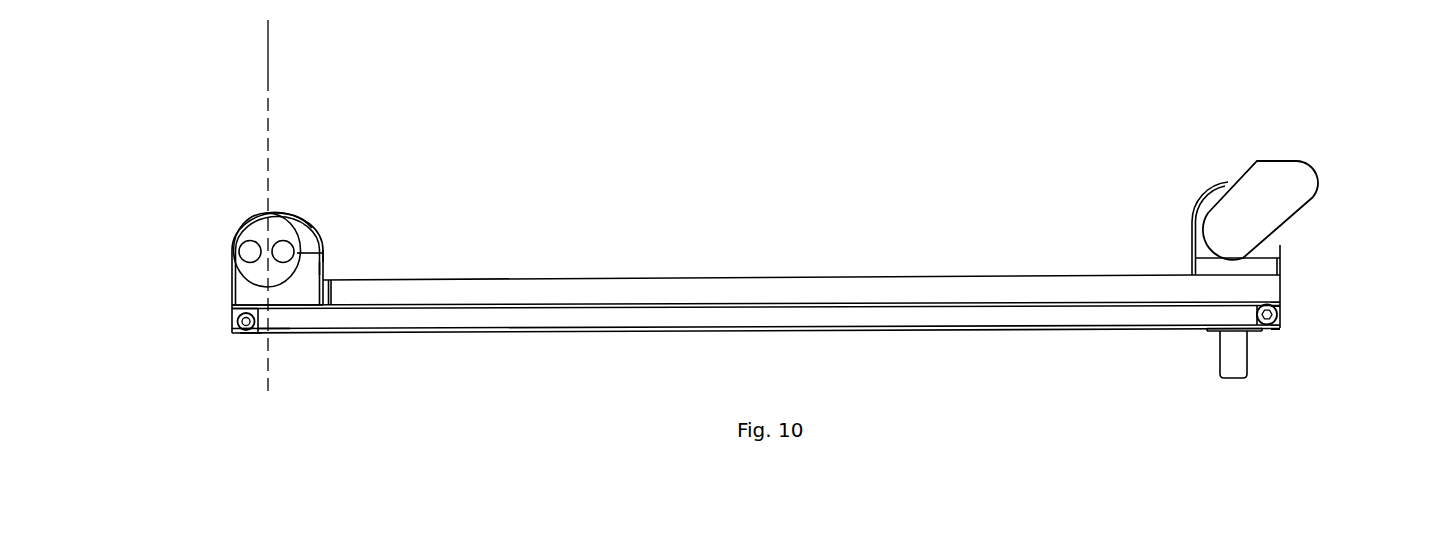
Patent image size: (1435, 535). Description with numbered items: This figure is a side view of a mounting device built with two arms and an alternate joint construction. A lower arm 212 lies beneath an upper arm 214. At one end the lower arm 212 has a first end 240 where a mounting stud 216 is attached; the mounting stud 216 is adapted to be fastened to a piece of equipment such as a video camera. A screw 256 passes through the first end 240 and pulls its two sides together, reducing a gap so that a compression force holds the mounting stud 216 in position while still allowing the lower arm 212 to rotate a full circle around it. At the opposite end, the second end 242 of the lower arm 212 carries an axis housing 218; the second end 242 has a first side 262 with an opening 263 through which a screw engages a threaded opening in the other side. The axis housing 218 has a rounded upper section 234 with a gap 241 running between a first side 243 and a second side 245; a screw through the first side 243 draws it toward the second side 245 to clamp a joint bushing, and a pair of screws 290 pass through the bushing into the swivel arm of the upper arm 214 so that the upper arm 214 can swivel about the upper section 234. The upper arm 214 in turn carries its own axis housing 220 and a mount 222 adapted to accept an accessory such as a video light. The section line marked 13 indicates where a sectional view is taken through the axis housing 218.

The section line 13- 13 is at (268, 20).
The lower arm 212 is at (405, 332).
The upper arm 214 is at (420, 287).
The mounting stud 216 is at (1248, 372).
The axis housing 218 is at (233, 277).
The axis housing 220 is at (1190, 237).
The mount 222 is at (1308, 183).
The rounded upper section 234 is at (277, 214).
The first end 240 is at (1278, 311).
The gap 241 is at (322, 250).
The second end 242 is at (236, 322).
The first side 243 is at (305, 217).
The second side 245 is at (323, 256).
The screw 256 is at (1280, 327).
The first side 262 is at (254, 332).
The opening 263 is at (275, 331).
The screws 290 is at (282, 251).